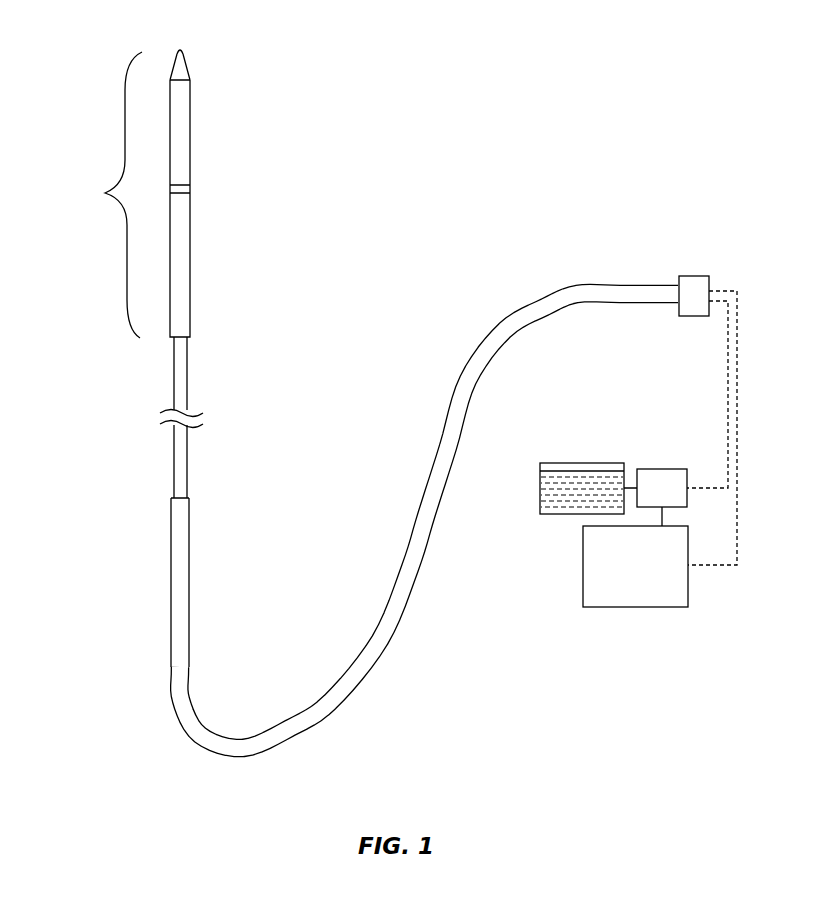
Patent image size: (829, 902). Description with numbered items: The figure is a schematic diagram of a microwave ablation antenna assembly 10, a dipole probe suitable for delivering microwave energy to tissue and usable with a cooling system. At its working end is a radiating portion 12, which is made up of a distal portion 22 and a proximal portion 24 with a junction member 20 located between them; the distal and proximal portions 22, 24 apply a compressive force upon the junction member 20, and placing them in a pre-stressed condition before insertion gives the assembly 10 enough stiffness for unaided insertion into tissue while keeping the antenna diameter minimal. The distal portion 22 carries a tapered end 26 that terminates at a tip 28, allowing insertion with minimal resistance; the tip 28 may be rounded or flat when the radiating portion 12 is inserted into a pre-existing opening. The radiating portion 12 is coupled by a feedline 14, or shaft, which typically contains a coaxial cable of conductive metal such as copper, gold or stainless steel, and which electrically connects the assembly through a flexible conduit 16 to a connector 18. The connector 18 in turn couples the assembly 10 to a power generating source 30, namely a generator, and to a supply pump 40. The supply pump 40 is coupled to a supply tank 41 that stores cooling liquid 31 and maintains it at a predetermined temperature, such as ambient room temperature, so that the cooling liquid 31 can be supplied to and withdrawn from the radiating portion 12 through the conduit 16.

The ablation antenna assembly 10 is at (511, 139).
The radiating portion 12 is at (105, 193).
The feedline 14 is at (174, 465).
The conduit 16 is at (171, 650).
The connector 18 is at (694, 276).
The junction member 20 is at (191, 189).
The distal portion 22 is at (209, 124).
The proximal portion 24 is at (209, 276).
The tapered end 26 is at (176, 56).
The tip 28 is at (182, 47).
The power generating source 30 is at (582, 566).
The cooling liquid 31 is at (552, 490).
The supply pump 40 is at (663, 469).
The supply tank 41 is at (583, 463).